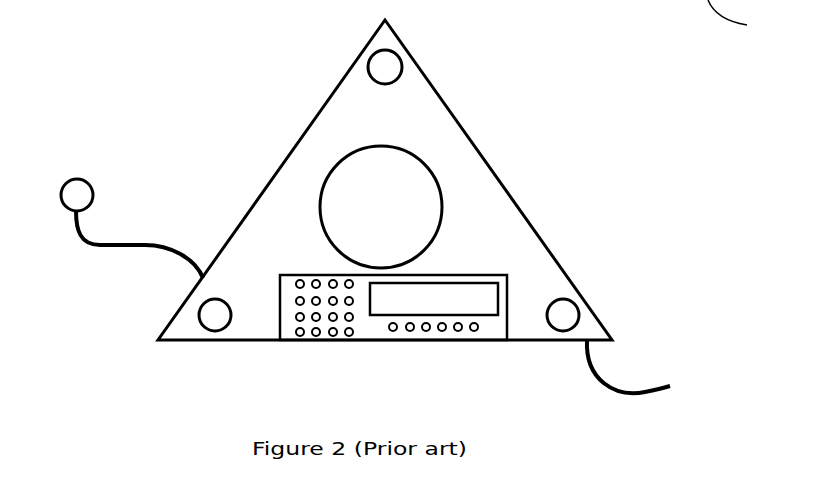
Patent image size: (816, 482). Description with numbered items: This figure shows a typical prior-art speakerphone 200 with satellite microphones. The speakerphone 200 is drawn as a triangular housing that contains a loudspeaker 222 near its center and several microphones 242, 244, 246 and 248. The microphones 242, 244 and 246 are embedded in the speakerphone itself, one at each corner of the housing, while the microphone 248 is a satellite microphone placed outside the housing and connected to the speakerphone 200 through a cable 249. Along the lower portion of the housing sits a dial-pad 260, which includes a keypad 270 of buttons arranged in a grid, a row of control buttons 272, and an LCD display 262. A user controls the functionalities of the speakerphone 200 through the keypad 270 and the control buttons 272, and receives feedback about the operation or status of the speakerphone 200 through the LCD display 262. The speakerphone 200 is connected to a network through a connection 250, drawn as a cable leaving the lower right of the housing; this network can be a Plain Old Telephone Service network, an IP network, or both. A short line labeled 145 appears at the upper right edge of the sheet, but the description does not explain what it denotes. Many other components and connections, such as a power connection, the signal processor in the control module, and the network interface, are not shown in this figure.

The speakerphone 200 is at (188, 118).
The loudspeaker 222 is at (358, 147).
The microphone 242 is at (391, 50).
The microphone 244 is at (207, 299).
The microphone 246 is at (565, 297).
The satellite microphone 248 is at (80, 177).
The cable 249 is at (113, 240).
The connection 250 is at (645, 387).
The dial-pad 260 is at (420, 274).
The LCD display 262 is at (468, 282).
The keypad 270 is at (325, 322).
The control buttons 272 is at (410, 330).
The connecting line 145 is at (750, 28).